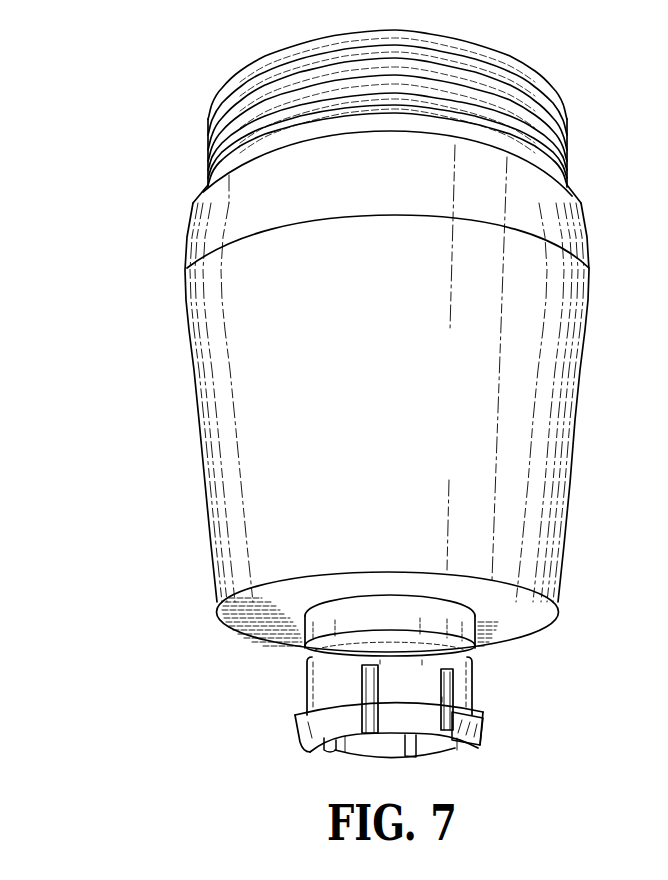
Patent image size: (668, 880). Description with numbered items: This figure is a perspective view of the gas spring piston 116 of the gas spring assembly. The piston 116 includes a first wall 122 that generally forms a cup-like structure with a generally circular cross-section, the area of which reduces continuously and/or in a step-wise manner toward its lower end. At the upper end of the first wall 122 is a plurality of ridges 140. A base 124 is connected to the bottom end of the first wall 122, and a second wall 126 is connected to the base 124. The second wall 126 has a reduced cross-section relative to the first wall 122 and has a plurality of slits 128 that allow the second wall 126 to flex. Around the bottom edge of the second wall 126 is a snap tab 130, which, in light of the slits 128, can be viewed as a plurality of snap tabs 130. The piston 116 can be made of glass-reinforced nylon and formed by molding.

The gas spring piston 116 is at (131, 219).
The first wall 122 is at (552, 371).
The base 124 is at (240, 643).
The second wall 126 is at (303, 683).
The slits 128 is at (412, 737).
The snap tab 130 is at (485, 727).
The ridges 140 is at (420, 70).